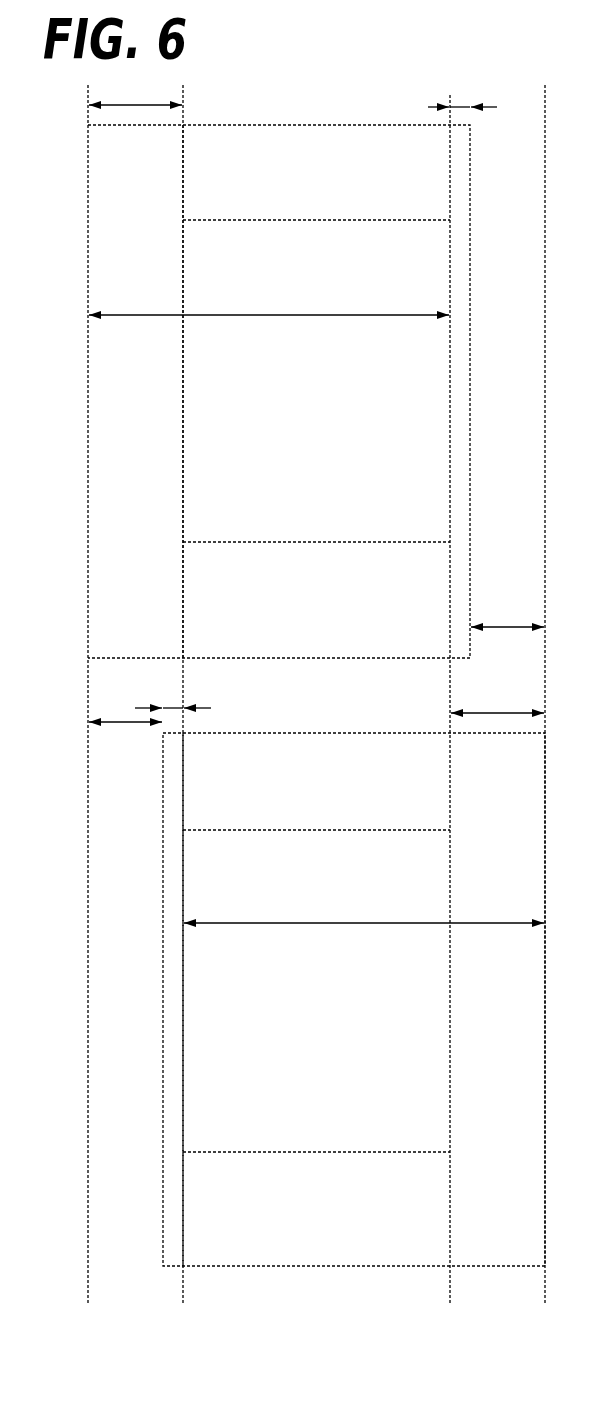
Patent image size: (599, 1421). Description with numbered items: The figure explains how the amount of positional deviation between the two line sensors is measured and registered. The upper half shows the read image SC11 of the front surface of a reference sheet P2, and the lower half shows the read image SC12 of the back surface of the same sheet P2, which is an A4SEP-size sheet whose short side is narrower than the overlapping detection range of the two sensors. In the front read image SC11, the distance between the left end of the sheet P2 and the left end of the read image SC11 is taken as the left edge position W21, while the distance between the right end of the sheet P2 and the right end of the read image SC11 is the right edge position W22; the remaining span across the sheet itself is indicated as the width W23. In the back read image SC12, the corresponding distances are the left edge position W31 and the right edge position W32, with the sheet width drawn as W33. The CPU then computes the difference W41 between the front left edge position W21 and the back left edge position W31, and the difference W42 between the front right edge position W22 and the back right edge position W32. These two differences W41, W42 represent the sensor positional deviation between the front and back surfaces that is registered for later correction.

The read image on the front surface SC11 is at (329, 123).
The read image on the back surface SC12 is at (376, 732).
The sheet P2 is at (197, 437).
The left edge position W21 is at (135, 90).
The right edge position W22 is at (461, 101).
The content width of first screen W23 is at (269, 301).
The left edge position W31 is at (173, 704).
The right edge position W32 is at (497, 701).
The content width of second screen W33 is at (364, 909).
The difference W41 is at (125, 738).
The difference W42 is at (507, 611).